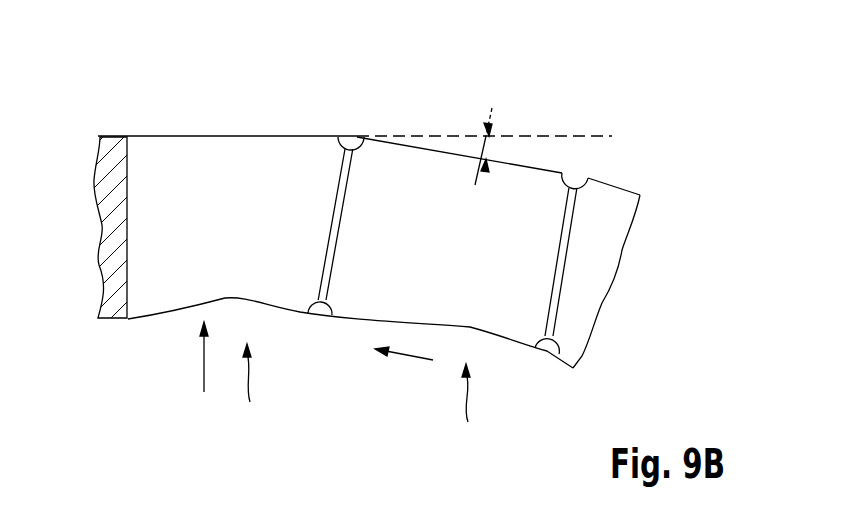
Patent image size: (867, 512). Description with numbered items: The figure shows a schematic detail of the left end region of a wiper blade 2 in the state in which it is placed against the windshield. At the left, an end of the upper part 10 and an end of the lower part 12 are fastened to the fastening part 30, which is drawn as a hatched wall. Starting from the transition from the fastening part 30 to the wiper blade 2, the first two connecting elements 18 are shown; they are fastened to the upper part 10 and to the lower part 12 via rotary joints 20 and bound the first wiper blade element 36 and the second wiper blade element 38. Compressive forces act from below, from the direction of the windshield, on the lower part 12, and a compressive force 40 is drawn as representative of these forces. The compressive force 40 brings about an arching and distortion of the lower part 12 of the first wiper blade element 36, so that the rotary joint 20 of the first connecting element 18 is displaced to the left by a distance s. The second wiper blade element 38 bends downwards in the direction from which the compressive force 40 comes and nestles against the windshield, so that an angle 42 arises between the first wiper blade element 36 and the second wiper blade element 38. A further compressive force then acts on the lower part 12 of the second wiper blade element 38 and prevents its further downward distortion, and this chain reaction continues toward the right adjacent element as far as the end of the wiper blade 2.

The wiper blade 2 is at (625, 326).
The upper part 10 is at (229, 138).
The lower part 12 is at (232, 297).
The connecting element 18 is at (336, 237).
The rotary joint 20 is at (352, 135).
The fastening part 30 is at (103, 230).
The first wiper blade element 36 is at (248, 390).
The second wiper blade element 38 is at (468, 409).
The compressive force 40 is at (203, 365).
The angle 42 is at (492, 148).
The distance s is at (410, 358).